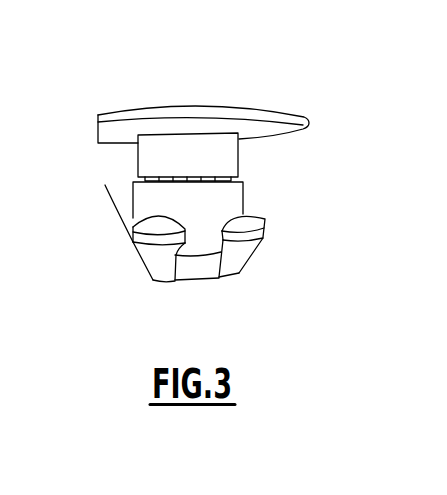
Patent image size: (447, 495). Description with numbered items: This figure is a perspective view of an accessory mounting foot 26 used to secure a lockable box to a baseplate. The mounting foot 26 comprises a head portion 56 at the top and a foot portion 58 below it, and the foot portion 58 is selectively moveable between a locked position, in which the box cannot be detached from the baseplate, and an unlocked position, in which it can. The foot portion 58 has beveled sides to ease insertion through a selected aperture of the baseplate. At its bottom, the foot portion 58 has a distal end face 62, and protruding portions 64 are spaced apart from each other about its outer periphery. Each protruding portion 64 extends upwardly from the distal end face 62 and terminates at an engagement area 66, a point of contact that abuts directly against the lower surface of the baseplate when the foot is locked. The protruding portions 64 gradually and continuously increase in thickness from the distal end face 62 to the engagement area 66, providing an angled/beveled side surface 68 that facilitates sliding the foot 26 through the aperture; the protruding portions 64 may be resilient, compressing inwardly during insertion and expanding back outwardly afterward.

The mounting foot 26 is at (242, 72).
The head portion 56 is at (292, 120).
The foot portion 58 is at (245, 192).
The distal end face 62 is at (219, 278).
The protruding portions 64 is at (124, 230).
The engagement area 66 is at (156, 236).
The angled/beveled side surface 68 is at (151, 262).